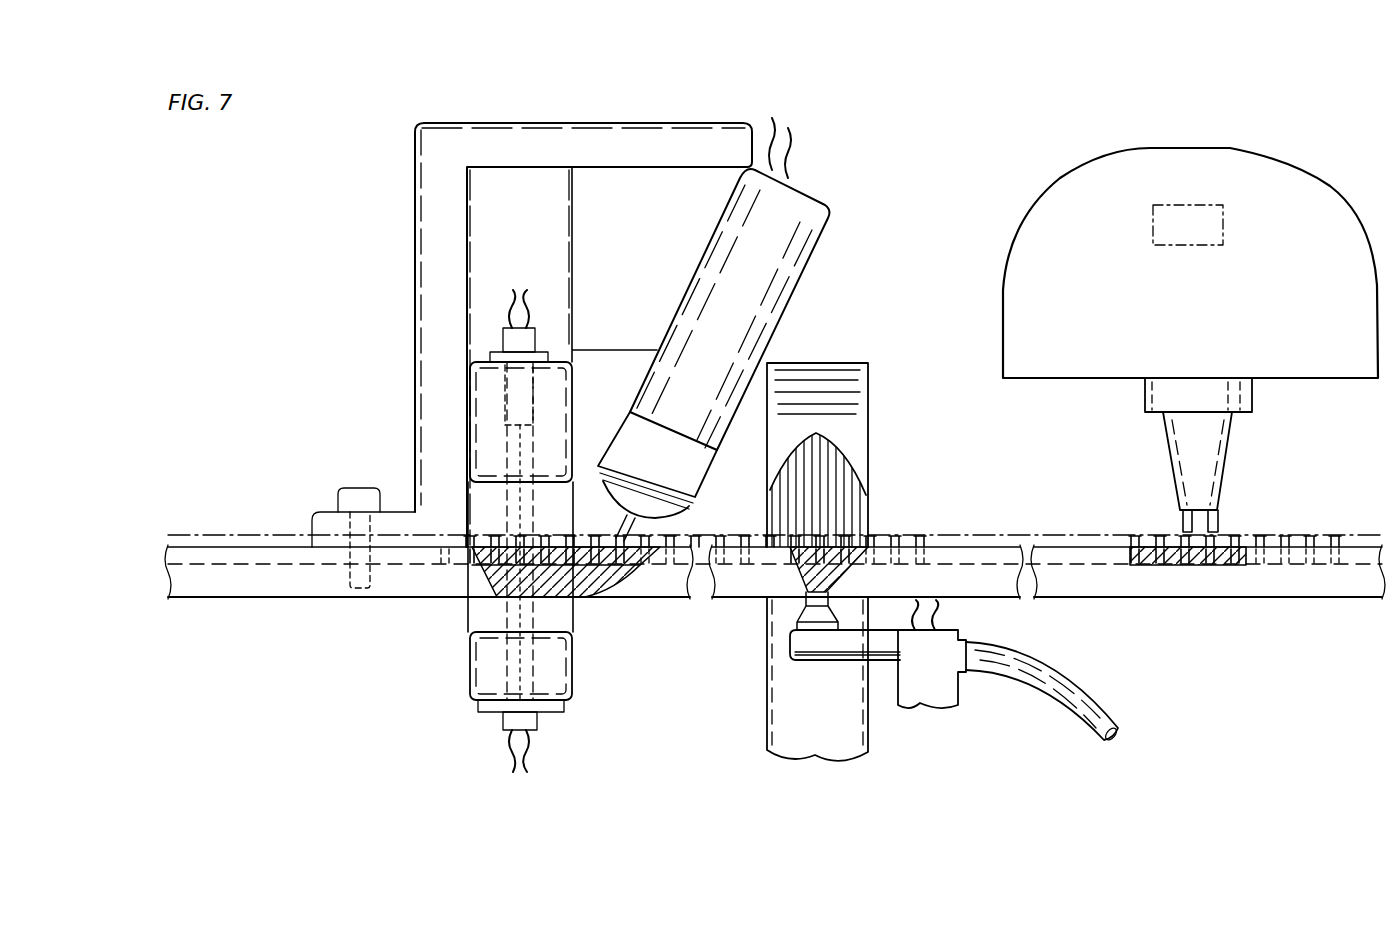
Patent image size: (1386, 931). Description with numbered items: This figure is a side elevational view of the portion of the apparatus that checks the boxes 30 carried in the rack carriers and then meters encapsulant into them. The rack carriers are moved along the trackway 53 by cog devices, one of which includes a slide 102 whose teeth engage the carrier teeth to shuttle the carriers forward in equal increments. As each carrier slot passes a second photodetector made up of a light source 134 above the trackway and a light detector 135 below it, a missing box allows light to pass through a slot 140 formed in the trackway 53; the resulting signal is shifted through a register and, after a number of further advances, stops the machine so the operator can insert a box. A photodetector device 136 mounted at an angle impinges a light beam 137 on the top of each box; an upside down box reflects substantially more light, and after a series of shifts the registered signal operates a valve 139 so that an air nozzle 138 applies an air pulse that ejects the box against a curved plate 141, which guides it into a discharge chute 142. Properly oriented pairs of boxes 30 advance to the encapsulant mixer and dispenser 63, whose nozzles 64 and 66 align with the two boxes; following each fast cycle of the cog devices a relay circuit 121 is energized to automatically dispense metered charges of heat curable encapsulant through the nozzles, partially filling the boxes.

The boxes 30 is at (920, 536).
The trackway 53 is at (295, 598).
The encapsulant mixer and dispenser 63 is at (1272, 306).
The nozzle 64 is at (1182, 525).
The nozzle 66 is at (1216, 525).
The slide 102 is at (1205, 568).
The relay circuit 121 is at (1210, 238).
The light source 134 is at (490, 397).
The light detector 135 is at (490, 662).
The photodetector device 136 is at (785, 280).
The light beam 137 is at (635, 527).
The air nozzle 138 is at (800, 580).
The valve 139 is at (942, 637).
The slot 140 is at (516, 592).
The curved plate 141 is at (858, 403).
The discharge chute 142 is at (767, 690).